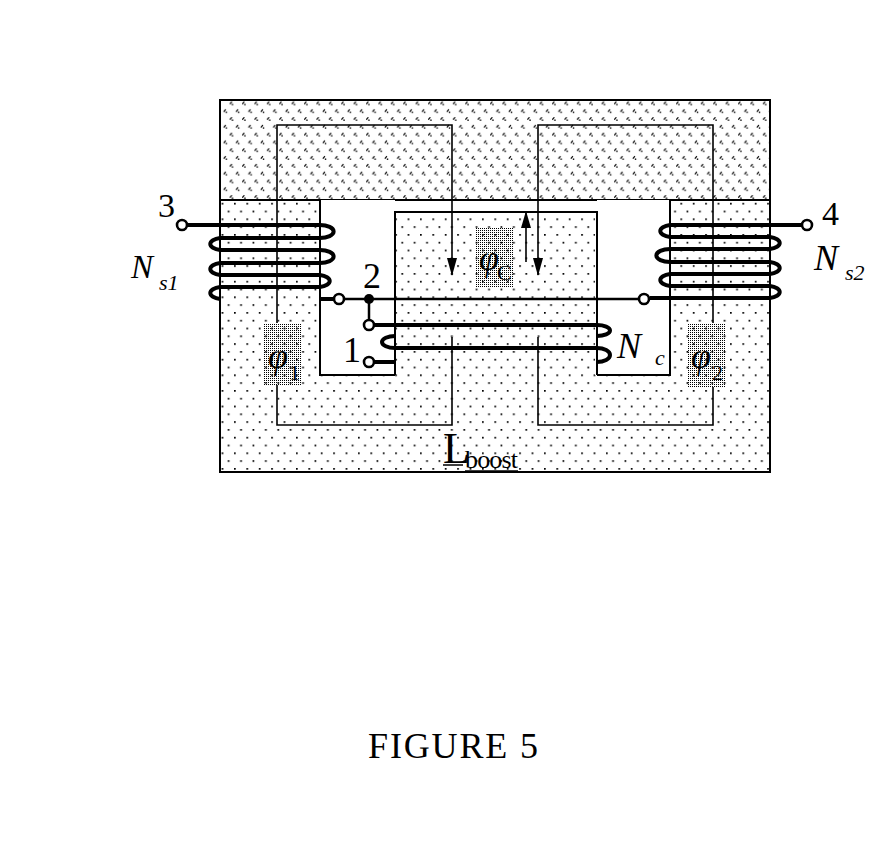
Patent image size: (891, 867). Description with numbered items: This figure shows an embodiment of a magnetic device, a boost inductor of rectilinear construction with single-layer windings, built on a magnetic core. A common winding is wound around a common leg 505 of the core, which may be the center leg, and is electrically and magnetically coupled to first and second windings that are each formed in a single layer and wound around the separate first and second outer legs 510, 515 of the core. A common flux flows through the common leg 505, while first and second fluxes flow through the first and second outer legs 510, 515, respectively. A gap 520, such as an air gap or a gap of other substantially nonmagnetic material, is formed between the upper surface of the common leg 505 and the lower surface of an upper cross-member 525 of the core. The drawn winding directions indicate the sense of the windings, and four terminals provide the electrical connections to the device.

The common leg 505 is at (510, 392).
The first outer leg 510 is at (283, 454).
The second outer leg 515 is at (746, 454).
The gap 520 is at (526, 200).
The upper cross-member 525 is at (508, 166).